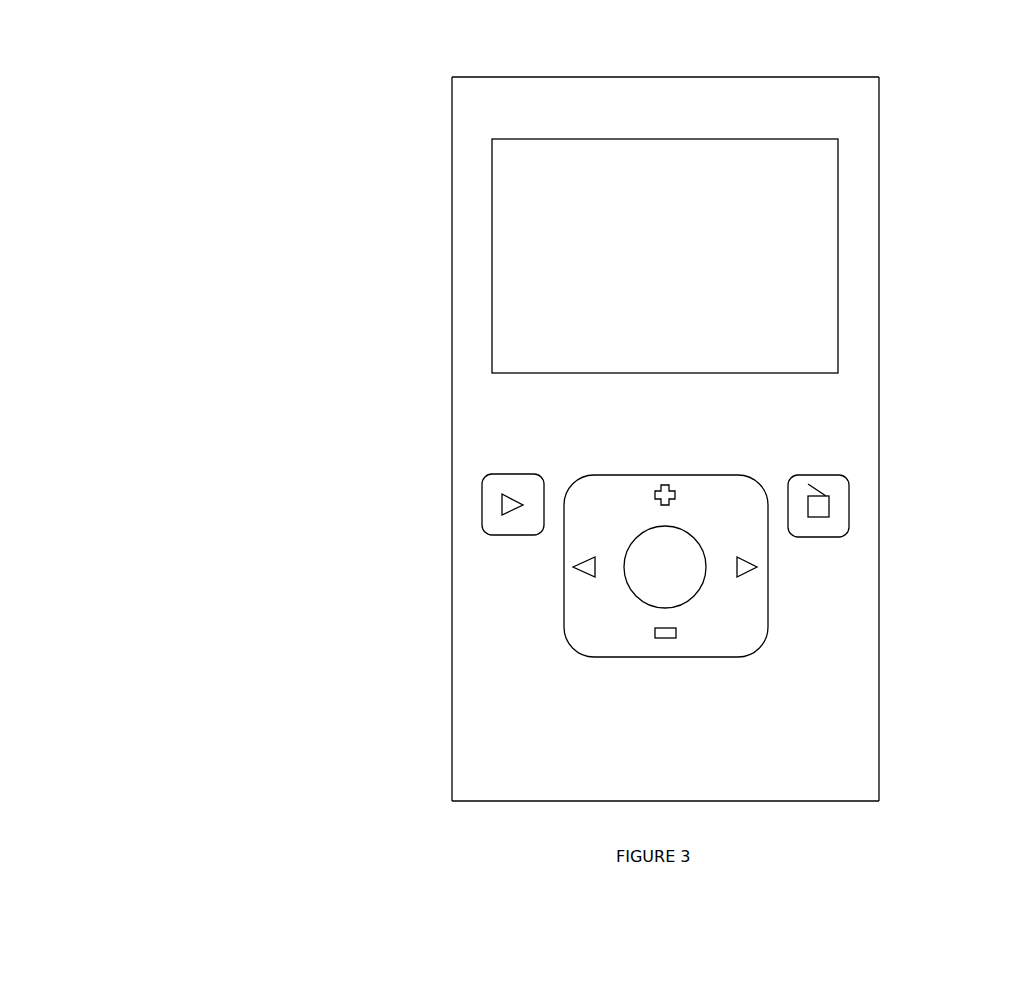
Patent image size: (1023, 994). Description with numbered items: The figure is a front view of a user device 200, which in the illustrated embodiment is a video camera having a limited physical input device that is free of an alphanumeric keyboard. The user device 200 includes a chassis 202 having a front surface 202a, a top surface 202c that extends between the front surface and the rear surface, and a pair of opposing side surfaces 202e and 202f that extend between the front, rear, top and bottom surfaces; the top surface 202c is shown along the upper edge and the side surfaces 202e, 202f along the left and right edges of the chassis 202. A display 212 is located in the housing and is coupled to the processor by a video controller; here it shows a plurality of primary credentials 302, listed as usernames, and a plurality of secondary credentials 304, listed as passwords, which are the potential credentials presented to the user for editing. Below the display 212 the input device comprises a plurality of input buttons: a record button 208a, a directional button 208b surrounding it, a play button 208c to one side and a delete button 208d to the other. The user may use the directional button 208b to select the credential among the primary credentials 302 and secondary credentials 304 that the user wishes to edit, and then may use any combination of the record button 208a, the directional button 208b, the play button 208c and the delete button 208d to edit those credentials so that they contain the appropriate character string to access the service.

The user device 200 is at (262, 133).
The chassis 202 is at (452, 77).
The front surface 202a is at (828, 750).
The top surface 202c is at (665, 77).
The side surface 202e is at (452, 403).
The side surface 202f is at (879, 413).
The display 212 is at (839, 291).
The primary credentials 302 is at (473, 170).
The secondary credentials 304 is at (473, 271).
The record button 208a is at (706, 576).
The directional button 208b is at (573, 650).
The play button 208c is at (480, 528).
The delete button 208d is at (848, 525).